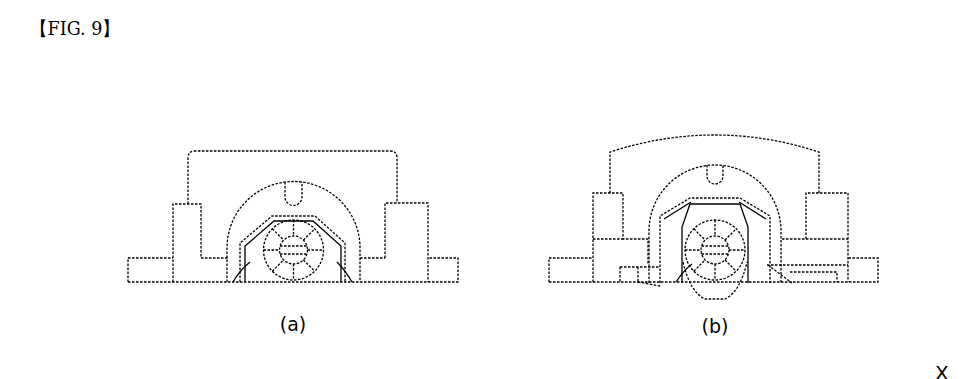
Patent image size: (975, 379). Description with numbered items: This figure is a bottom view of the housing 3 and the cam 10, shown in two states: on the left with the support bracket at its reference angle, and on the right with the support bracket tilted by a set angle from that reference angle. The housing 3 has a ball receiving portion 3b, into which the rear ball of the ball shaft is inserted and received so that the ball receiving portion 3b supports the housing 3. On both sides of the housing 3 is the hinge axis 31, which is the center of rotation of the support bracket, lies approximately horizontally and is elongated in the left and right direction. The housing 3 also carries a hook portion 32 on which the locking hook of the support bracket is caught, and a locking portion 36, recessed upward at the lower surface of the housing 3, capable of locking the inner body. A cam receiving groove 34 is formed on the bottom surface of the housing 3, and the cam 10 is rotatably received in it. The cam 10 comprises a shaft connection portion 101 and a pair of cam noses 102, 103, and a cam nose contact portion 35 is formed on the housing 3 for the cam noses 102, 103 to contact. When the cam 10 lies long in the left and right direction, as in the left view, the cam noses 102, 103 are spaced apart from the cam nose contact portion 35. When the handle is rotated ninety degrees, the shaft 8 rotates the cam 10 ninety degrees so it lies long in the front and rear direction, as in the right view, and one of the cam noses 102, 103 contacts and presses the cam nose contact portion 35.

The housing 3 is at (407, 267).
The ball receiving portion 3b is at (358, 158).
The shaft 8 is at (282, 271).
The cam 10 is at (317, 351).
The hinge axis 31 is at (138, 275).
The hook portion 32 is at (180, 203).
The cam receiving groove 34 is at (259, 279).
The cam nose contact portion 35 is at (288, 216).
The locking portion 36 is at (293, 192).
The shaft connection portion 101 is at (300, 264).
The cam nose 102 is at (252, 260).
The cam nose 103 is at (345, 264).